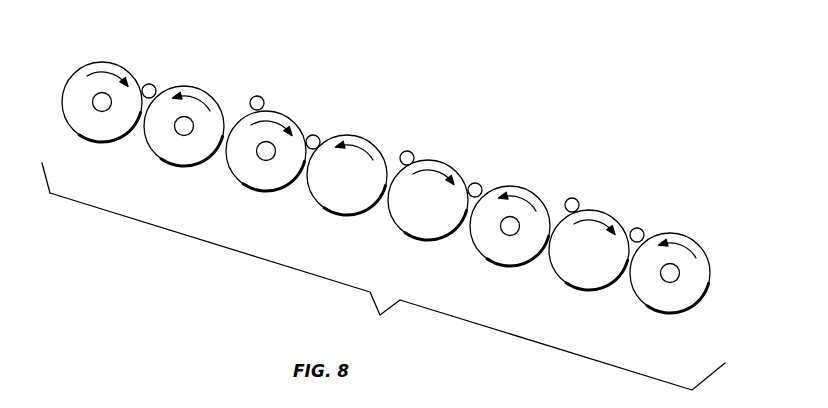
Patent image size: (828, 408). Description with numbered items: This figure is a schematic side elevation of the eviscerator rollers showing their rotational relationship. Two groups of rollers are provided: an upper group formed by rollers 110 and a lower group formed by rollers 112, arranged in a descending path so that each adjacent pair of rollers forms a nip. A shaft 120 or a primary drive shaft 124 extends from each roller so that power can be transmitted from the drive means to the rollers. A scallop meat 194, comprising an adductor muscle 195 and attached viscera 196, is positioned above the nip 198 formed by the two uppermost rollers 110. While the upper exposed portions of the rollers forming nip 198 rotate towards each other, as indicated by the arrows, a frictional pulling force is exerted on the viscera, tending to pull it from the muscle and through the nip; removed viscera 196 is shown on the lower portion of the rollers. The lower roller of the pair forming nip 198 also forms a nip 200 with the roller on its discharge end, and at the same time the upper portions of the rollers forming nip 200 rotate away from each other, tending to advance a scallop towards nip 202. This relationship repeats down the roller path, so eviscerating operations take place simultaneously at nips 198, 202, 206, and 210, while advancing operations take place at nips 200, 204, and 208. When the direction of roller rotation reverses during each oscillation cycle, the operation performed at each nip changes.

The roller 110 is at (140, 103).
The roller 112 is at (502, 187).
The shaft 120 is at (92, 103).
The primary drive shaft 124 is at (192, 134).
The scallop meat 194 is at (250, 104).
The adductor muscle 195 is at (410, 151).
The viscera 196 is at (118, 136).
The nip 198 is at (137, 136).
The nip 200 is at (219, 163).
The nip 202 is at (321, 187).
The nip 204 is at (383, 210).
The nip 206 is at (458, 237).
The nip 208 is at (544, 255).
The nip 210 is at (626, 285).